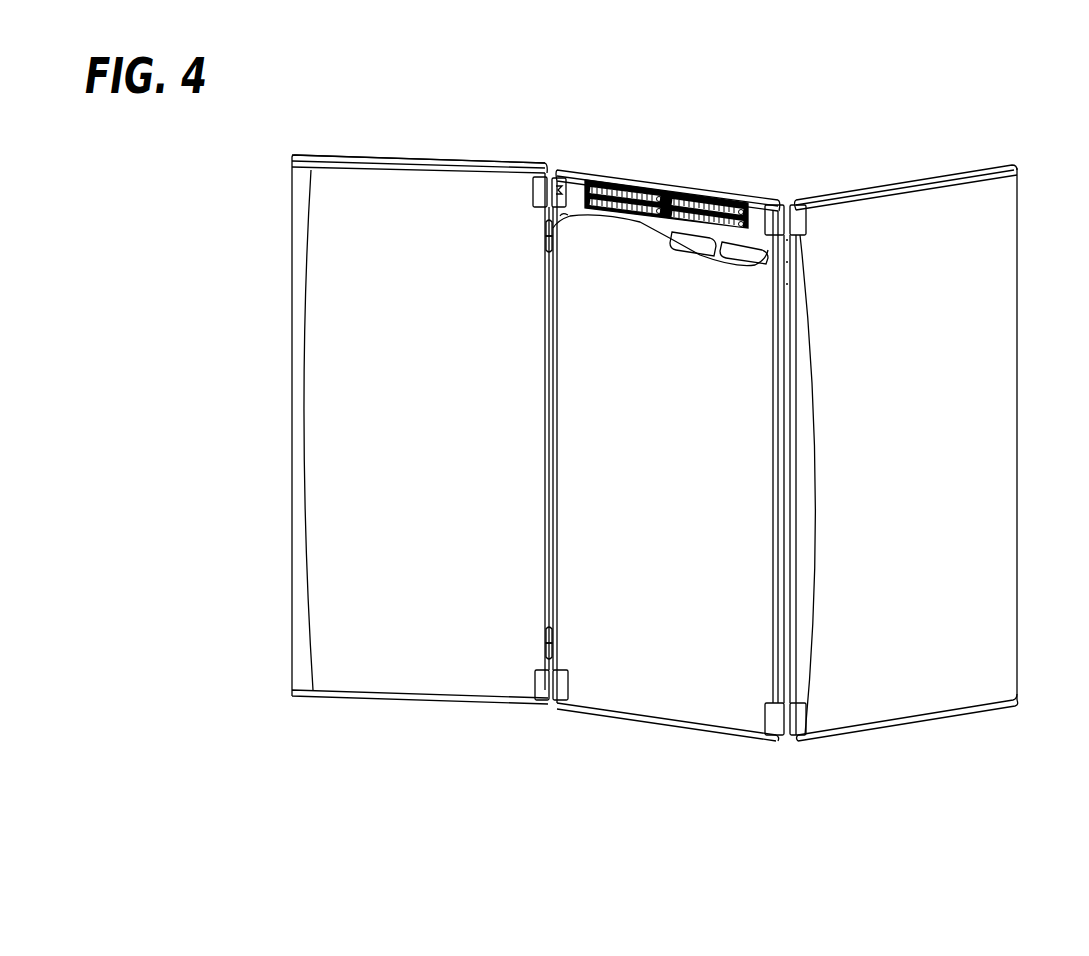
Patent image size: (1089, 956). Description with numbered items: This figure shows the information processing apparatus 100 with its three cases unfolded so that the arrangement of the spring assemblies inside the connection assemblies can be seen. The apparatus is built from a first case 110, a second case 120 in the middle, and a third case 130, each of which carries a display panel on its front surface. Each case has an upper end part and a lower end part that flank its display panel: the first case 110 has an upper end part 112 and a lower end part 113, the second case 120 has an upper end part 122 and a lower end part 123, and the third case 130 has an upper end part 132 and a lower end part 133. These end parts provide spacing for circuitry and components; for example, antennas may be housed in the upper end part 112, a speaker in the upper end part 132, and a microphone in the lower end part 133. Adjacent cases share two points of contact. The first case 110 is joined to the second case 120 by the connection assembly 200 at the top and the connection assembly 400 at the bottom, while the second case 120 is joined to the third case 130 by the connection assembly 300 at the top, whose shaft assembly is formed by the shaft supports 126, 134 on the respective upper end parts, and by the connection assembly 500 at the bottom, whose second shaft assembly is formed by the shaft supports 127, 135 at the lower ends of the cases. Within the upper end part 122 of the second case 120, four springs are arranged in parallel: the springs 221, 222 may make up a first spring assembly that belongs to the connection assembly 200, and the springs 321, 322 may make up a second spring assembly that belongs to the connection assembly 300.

The information processing apparatus 100 is at (1071, 63).
The first case 110 is at (906, 441).
The upper end part of the first case 112 is at (853, 190).
The lower end part of the first case 113 is at (870, 695).
The second case 120 is at (678, 408).
The upper end part of the second case 122 is at (572, 168).
The lower end part of the second case 123 is at (640, 695).
The shaft support 126 is at (547, 223).
The shaft support 127 is at (548, 637).
The third case 130 is at (420, 421).
The upper end part of the third case 132 is at (360, 185).
The lower end part of the third case 133 is at (400, 670).
The shaft support 134 is at (548, 247).
The shaft support 135 is at (548, 652).
The connection assembly 200 is at (788, 200).
The spring 221 is at (700, 200).
The spring 222 is at (733, 218).
The connection assembly 300 is at (550, 168).
The spring 321 is at (600, 188).
The spring 322 is at (635, 207).
The connection assembly 400 is at (790, 738).
The connection assembly 500 is at (551, 705).